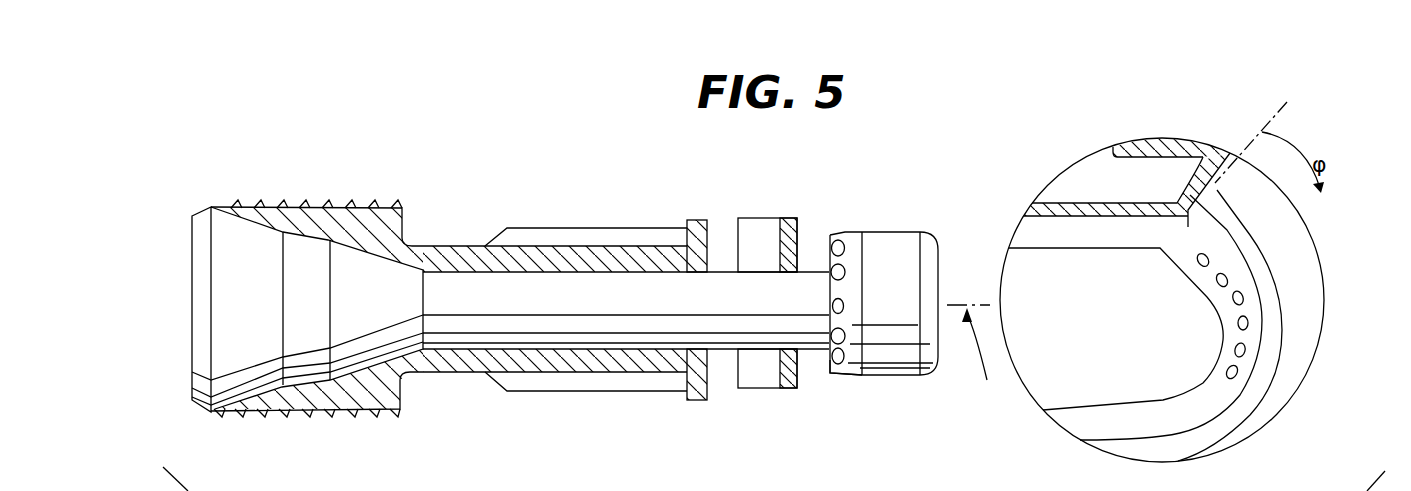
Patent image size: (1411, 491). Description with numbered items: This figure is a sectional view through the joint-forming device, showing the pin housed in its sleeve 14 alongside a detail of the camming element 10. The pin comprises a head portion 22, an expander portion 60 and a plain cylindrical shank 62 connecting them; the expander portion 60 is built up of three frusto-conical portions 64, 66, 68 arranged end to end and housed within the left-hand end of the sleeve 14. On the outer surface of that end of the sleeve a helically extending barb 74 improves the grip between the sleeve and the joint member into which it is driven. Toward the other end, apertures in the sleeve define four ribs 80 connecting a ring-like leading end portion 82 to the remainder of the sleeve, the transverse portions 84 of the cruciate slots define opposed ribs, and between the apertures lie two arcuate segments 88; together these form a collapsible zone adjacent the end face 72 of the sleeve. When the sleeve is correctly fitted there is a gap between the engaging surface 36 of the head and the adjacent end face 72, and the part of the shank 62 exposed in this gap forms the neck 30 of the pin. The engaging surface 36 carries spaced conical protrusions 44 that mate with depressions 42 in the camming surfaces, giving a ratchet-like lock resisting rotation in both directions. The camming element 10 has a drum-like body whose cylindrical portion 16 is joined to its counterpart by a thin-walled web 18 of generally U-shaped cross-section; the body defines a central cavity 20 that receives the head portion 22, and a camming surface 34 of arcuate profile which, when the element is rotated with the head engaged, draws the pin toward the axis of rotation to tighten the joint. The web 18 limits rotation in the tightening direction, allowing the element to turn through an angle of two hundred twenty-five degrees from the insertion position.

The camming element 10 is at (1193, 140).
The sleeve 14 is at (613, 390).
The cylindrical portion 16 is at (1302, 350).
The web 18 is at (1140, 138).
The cavity 20 is at (1112, 363).
The head portion 22 is at (892, 363).
The neck portion 30 is at (805, 283).
The camming surface 34 is at (1198, 398).
The engaging surface 36 is at (857, 257).
The depressions 42 is at (1230, 278).
The conical protrusions 44 is at (835, 373).
The expander portion 60 is at (305, 261).
The shank 62 is at (513, 288).
The frusto-conical portion 64 is at (407, 330).
The frusto-conical portion 66 is at (313, 360).
The frusto-conical portion 68 is at (223, 387).
The end face 72 is at (798, 222).
The barb 74 is at (262, 207).
The ribs 80 is at (742, 390).
The ring-like leading end portion 82 is at (780, 390).
The transverse portions 84 is at (715, 380).
The arcuate segments 88 is at (687, 222).